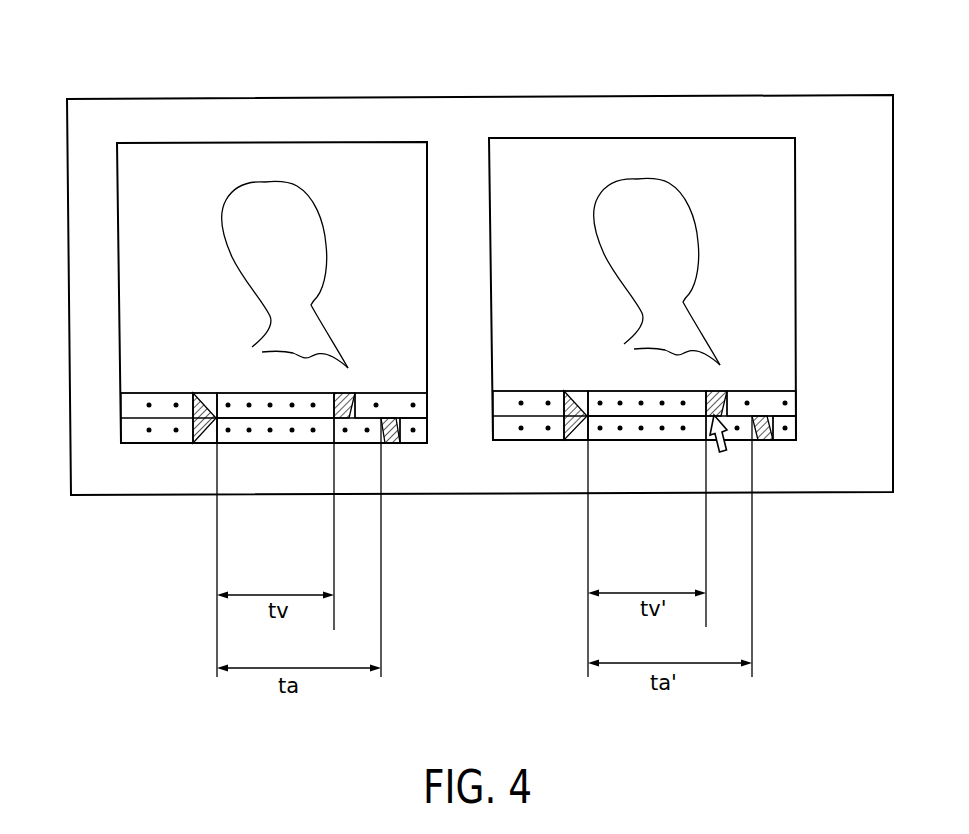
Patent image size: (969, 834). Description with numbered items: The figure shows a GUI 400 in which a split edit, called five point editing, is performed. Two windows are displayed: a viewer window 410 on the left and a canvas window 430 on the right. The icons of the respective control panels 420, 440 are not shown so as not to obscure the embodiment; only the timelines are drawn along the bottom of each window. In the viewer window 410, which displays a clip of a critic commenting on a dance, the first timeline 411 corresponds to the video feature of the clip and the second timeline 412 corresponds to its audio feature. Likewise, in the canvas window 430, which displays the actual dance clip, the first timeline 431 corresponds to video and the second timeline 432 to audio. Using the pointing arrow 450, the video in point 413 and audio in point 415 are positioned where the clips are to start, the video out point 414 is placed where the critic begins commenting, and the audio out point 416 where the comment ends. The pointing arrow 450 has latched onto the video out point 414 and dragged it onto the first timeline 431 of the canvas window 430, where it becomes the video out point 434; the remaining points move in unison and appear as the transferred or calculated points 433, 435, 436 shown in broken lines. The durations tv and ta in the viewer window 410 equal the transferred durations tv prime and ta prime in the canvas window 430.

The GUI 400 is at (585, 95).
The viewer window 410 is at (160, 143).
The first timeline 411 is at (270, 404).
The second timeline 412 is at (300, 428).
The video in point 413 is at (195, 402).
The video out point 414 is at (350, 424).
The audio in point 415 is at (207, 443).
The audio out point 416 is at (400, 440).
The control panel 420 is at (255, 445).
The canvas window 430 is at (528, 138).
The first timeline 431 is at (641, 400).
The second timeline 432 is at (670, 426).
The transferred video in point 433 is at (570, 391).
The video out point 434 is at (755, 440).
The transferred audio in point 435 is at (578, 441).
The transferred audio out point 436 is at (770, 440).
The control panel 440 is at (625, 441).
The pointing arrow 450 is at (725, 452).